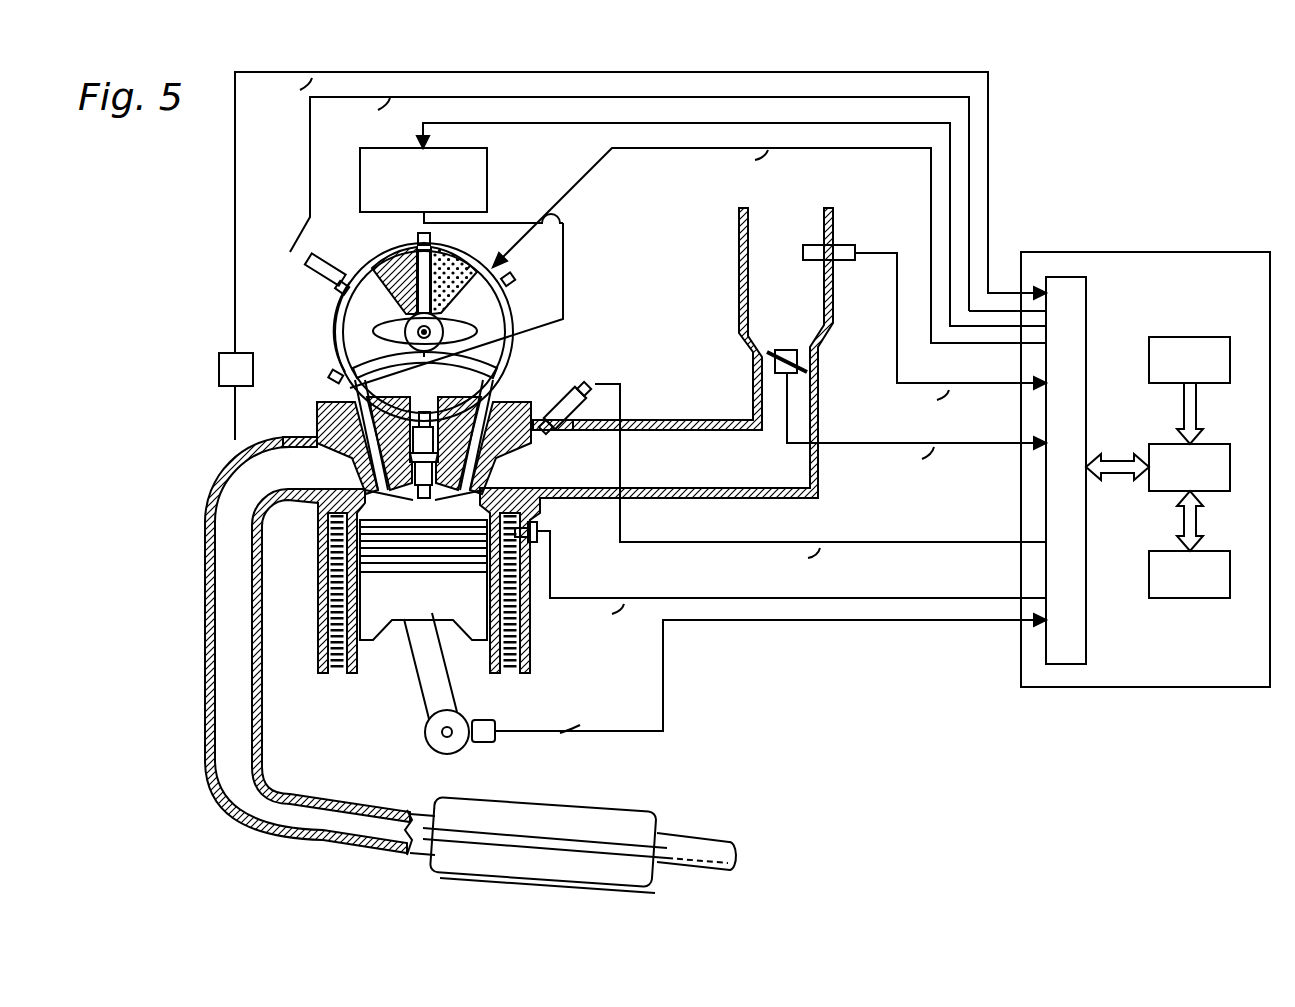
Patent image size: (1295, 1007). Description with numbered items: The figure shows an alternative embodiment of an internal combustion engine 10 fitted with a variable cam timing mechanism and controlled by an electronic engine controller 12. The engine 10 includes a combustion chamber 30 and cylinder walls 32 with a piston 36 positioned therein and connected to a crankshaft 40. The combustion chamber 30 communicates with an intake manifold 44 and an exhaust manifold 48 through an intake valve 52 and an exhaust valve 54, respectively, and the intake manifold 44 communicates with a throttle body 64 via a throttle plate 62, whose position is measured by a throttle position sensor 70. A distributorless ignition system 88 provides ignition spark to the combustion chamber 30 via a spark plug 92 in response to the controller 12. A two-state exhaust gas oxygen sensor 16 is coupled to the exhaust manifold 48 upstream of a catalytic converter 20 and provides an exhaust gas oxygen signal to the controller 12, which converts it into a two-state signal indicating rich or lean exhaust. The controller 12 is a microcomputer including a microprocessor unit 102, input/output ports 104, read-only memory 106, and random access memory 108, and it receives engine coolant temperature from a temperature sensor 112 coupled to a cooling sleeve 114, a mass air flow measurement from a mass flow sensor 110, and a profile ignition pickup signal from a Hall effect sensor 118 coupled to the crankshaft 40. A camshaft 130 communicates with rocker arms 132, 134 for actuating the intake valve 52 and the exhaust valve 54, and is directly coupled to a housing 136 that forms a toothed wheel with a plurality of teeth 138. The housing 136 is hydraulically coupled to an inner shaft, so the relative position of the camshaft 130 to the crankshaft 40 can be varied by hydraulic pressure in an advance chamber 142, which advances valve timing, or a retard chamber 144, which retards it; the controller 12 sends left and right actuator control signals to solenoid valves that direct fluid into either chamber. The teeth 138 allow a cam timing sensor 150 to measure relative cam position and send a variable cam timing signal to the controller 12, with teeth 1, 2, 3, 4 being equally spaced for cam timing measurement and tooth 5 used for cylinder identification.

The tooth 1 is at (415, 238).
The tooth 2 is at (510, 285).
The tooth 3 is at (450, 420).
The tooth 4 is at (334, 371).
The tooth 5 is at (338, 292).
The internal combustion engine 10 is at (583, 324).
The electronic engine controller 12 is at (1145, 456).
The exhaust gas oxygen sensor 16 is at (242, 353).
The catalytic converter 20 is at (620, 810).
The combustion chamber 30 is at (380, 520).
The cylinder walls 32 is at (352, 680).
The piston 36 is at (420, 612).
The crankshaft 40 is at (448, 748).
The intake manifold 44 is at (736, 479).
The exhaust manifold 48 is at (222, 512).
The intake valve 52 is at (478, 490).
The exhaust valve 54 is at (362, 488).
The throttle plate 62 is at (770, 352).
The throttle body 64 is at (742, 262).
The throttle position sensor 70 is at (788, 350).
The distributorless ignition system 88 is at (478, 188).
The spark plug 92 is at (412, 423).
The microprocessor unit 102 is at (1200, 444).
The input/output ports 104 is at (1090, 320).
The read-only memory 106 is at (1175, 337).
The random access memory 108 is at (1200, 551).
The mass air flow sensor 110 is at (840, 245).
The temperature sensor 112 is at (538, 528).
The cooling sleeve 114 is at (512, 650).
The Hall effect sensor 118 is at (478, 720).
The camshaft 130 is at (402, 322).
The rocker arm 132 is at (350, 393).
The rocker arm 134 is at (510, 392).
The housing 136 is at (330, 352).
The teeth 138 is at (480, 272).
The advance chamber 142 is at (448, 262).
The retard chamber 144 is at (392, 266).
The cam timing sensor 150 is at (310, 278).